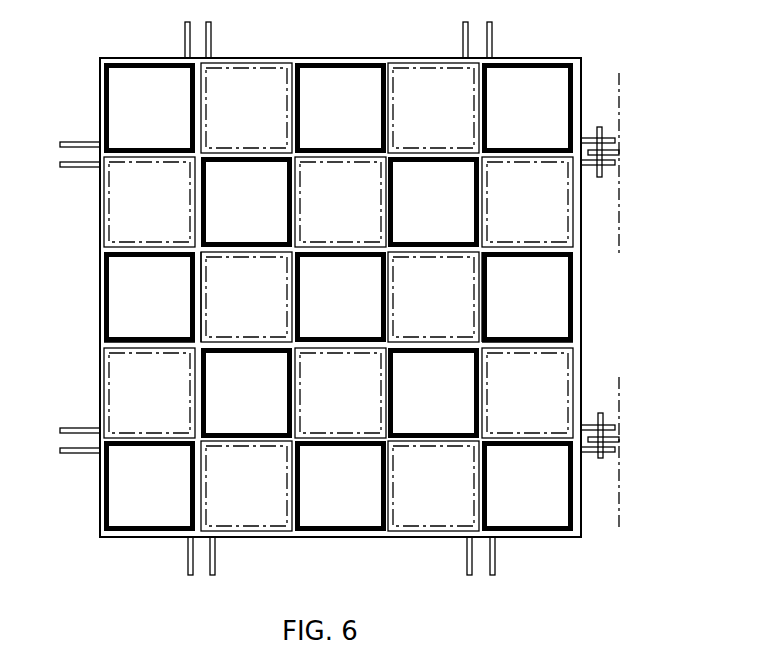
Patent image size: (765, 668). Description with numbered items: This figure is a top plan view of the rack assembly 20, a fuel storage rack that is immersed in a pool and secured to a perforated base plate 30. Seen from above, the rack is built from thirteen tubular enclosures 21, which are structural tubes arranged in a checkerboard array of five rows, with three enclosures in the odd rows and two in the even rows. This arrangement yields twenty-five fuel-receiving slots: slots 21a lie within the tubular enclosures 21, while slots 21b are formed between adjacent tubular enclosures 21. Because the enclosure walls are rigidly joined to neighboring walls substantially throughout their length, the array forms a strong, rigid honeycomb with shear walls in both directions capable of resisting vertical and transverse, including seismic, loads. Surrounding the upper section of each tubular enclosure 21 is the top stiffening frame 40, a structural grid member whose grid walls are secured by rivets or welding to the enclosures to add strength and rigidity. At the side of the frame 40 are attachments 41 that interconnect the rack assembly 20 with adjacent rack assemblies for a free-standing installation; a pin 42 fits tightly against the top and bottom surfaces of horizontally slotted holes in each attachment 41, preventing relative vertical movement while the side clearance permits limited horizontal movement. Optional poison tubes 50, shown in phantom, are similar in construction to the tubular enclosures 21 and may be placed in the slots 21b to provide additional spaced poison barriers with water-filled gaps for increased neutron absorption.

The rack assembly 20 is at (660, 44).
The tubular enclosure 21 is at (297, 308).
The slot within tubular enclosure 21a is at (150, 108).
The slot between adjacent tubular enclosures 21b is at (246, 108).
The perforated base plate 30 is at (525, 58).
The top stiffening frame 40 is at (153, 348).
The attachment 41 is at (605, 146).
The pin 42 is at (600, 178).
The poison tube 50 is at (238, 67).